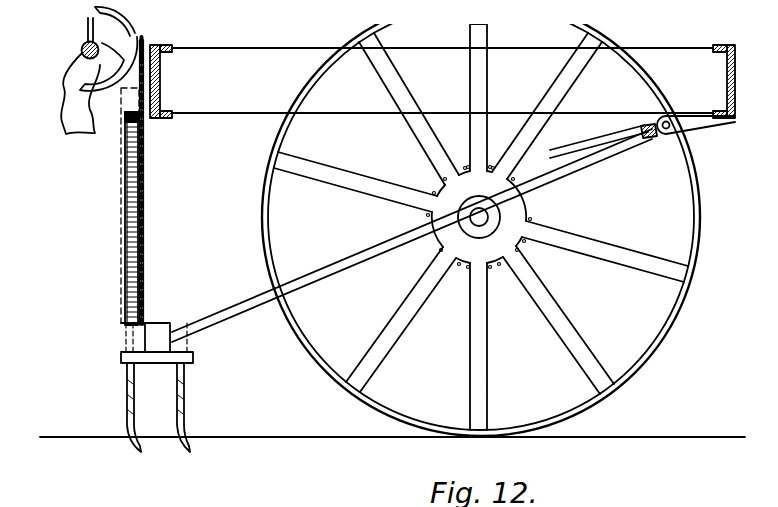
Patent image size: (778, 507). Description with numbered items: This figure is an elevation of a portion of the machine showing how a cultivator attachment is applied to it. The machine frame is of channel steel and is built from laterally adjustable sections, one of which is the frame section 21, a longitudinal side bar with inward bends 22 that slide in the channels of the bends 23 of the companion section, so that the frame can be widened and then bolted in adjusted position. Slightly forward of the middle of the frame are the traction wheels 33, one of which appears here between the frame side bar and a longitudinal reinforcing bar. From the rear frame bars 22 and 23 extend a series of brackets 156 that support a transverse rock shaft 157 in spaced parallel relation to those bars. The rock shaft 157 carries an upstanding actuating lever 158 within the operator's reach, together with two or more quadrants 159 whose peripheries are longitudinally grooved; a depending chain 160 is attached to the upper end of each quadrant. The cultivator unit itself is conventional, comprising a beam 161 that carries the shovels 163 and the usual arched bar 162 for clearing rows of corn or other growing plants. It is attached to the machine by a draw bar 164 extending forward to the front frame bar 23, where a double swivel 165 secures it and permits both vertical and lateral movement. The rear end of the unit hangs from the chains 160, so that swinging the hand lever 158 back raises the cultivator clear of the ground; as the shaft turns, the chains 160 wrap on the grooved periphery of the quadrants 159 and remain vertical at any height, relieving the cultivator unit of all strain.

The frame section 21 is at (442, 80).
The bends 22 is at (160, 100).
The bends 23 is at (155, 118).
The traction wheels 33 is at (263, 228).
The brackets 156 is at (144, 43).
The rock shaft 157 is at (83, 55).
The actuating lever 158 is at (82, 43).
The quadrants 159 is at (93, 85).
The chain 160 is at (145, 227).
The beam 161 is at (184, 361).
The arched bar 162 is at (130, 188).
The shovels 163 is at (178, 437).
The draw bar 164 is at (263, 303).
The double swivel 165 is at (660, 141).